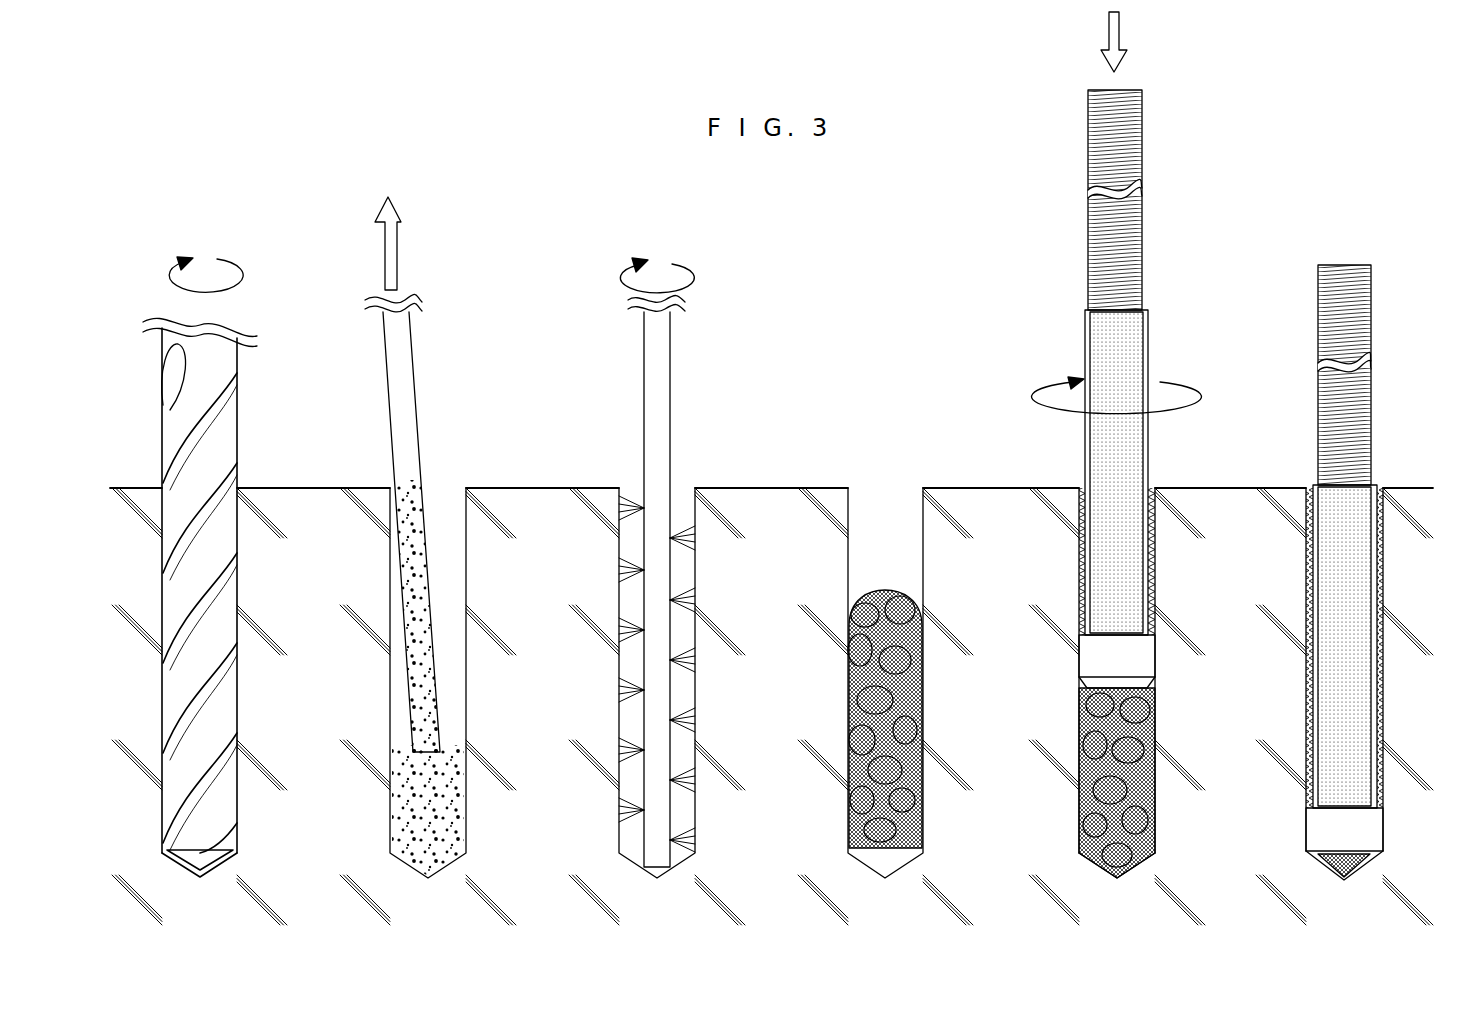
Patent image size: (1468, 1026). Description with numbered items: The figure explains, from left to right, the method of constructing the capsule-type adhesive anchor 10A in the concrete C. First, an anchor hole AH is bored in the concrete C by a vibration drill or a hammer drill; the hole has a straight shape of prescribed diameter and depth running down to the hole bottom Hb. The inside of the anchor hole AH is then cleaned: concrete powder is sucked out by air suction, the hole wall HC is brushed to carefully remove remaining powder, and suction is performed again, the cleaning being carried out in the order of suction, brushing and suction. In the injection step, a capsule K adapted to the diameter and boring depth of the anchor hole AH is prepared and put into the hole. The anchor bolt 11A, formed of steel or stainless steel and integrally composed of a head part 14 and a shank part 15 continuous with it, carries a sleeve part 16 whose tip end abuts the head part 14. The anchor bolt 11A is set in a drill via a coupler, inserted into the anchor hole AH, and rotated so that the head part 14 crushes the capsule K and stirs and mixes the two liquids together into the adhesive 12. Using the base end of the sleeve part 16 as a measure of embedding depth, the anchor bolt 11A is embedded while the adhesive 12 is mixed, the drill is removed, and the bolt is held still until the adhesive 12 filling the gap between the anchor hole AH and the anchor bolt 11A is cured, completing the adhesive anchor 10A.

The anchor hole AH is at (1305, 486).
The concrete C is at (1418, 487).
The hole wall HC is at (684, 686).
The capsule K is at (913, 593).
The adhesive 12 is at (1384, 690).
The head part 14 is at (1375, 840).
The shank part 15 is at (1385, 388).
The sleeve part 16 is at (1384, 570).
The anchor bolt 11A is at (1303, 275).
The adhesive anchor 10A is at (1338, 162).
The hole bottom Hb is at (1110, 876).